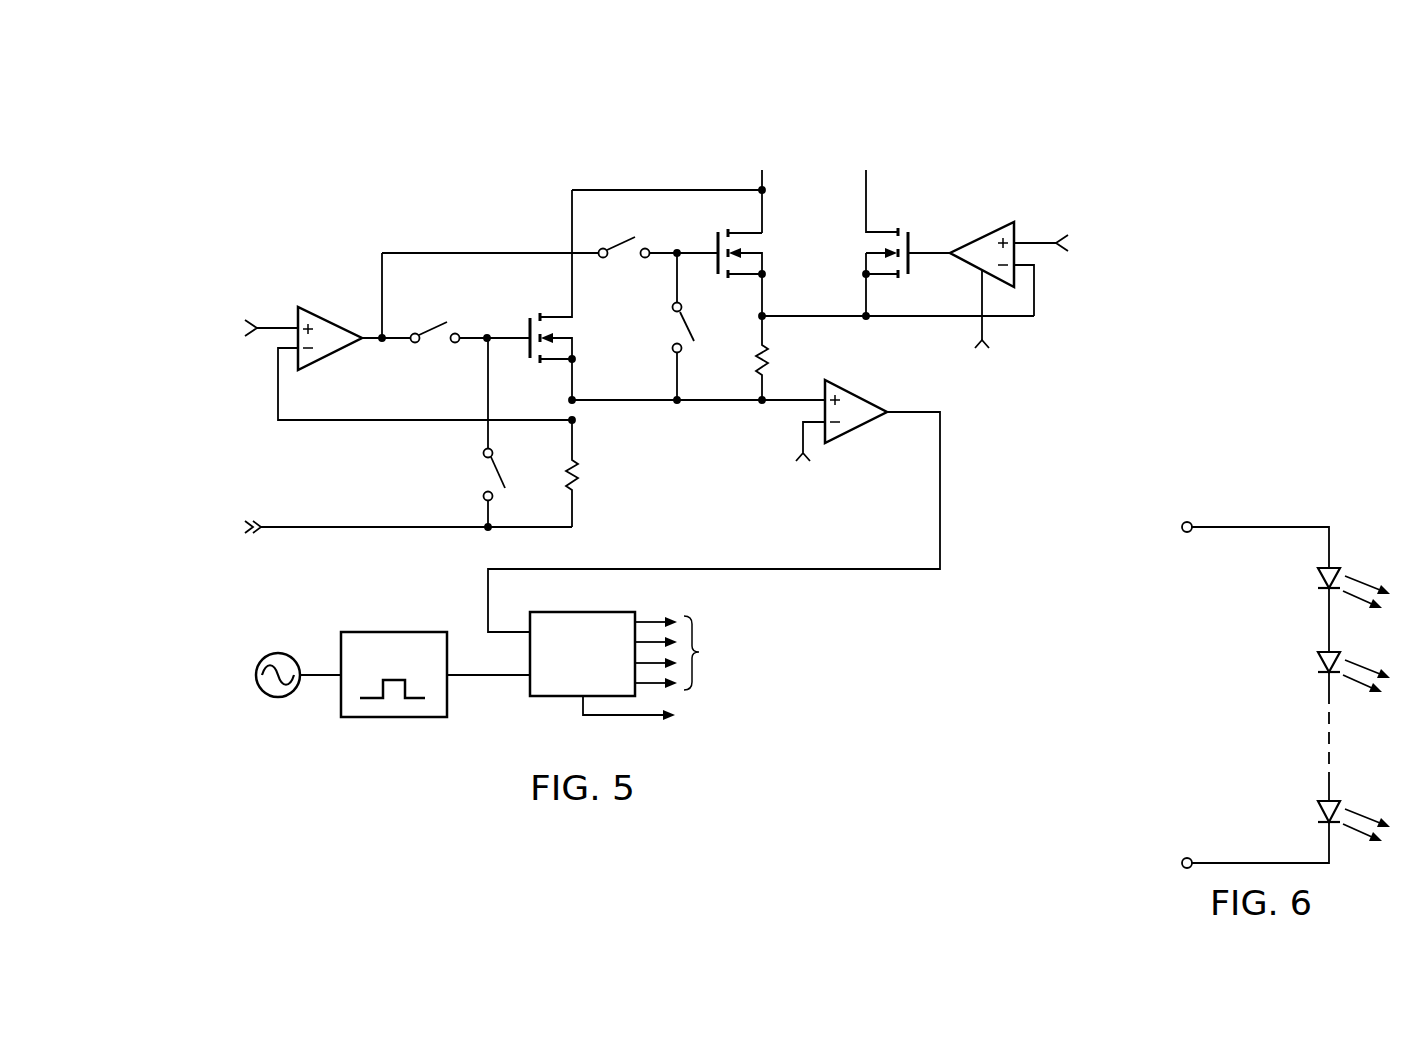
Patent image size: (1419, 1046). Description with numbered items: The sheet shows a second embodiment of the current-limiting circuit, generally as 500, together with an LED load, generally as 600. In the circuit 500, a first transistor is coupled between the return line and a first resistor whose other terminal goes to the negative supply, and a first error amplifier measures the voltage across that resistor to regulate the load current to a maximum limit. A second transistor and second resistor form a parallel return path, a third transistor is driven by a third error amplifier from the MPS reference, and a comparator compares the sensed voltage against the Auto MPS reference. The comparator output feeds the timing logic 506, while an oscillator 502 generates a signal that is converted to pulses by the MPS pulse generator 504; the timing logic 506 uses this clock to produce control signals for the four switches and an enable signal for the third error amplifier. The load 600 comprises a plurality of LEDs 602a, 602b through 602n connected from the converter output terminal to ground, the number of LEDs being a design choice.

In FIG. 5, the circuit 500 is at (356, 172).
In FIG. 5, the oscillator OSC1 502 is at (278, 697).
In FIG. 5, the MPS pulse generator 504 is at (395, 717).
In FIG. 5, the timing logic 506 is at (563, 696).
In FIG. 6, the LED load 600 is at (1304, 498).
In FIG. 6, the LED 602a is at (1318, 582).
In FIG. 6, the LED 602b is at (1318, 666).
In FIG. 6, the LED 602n is at (1318, 814).